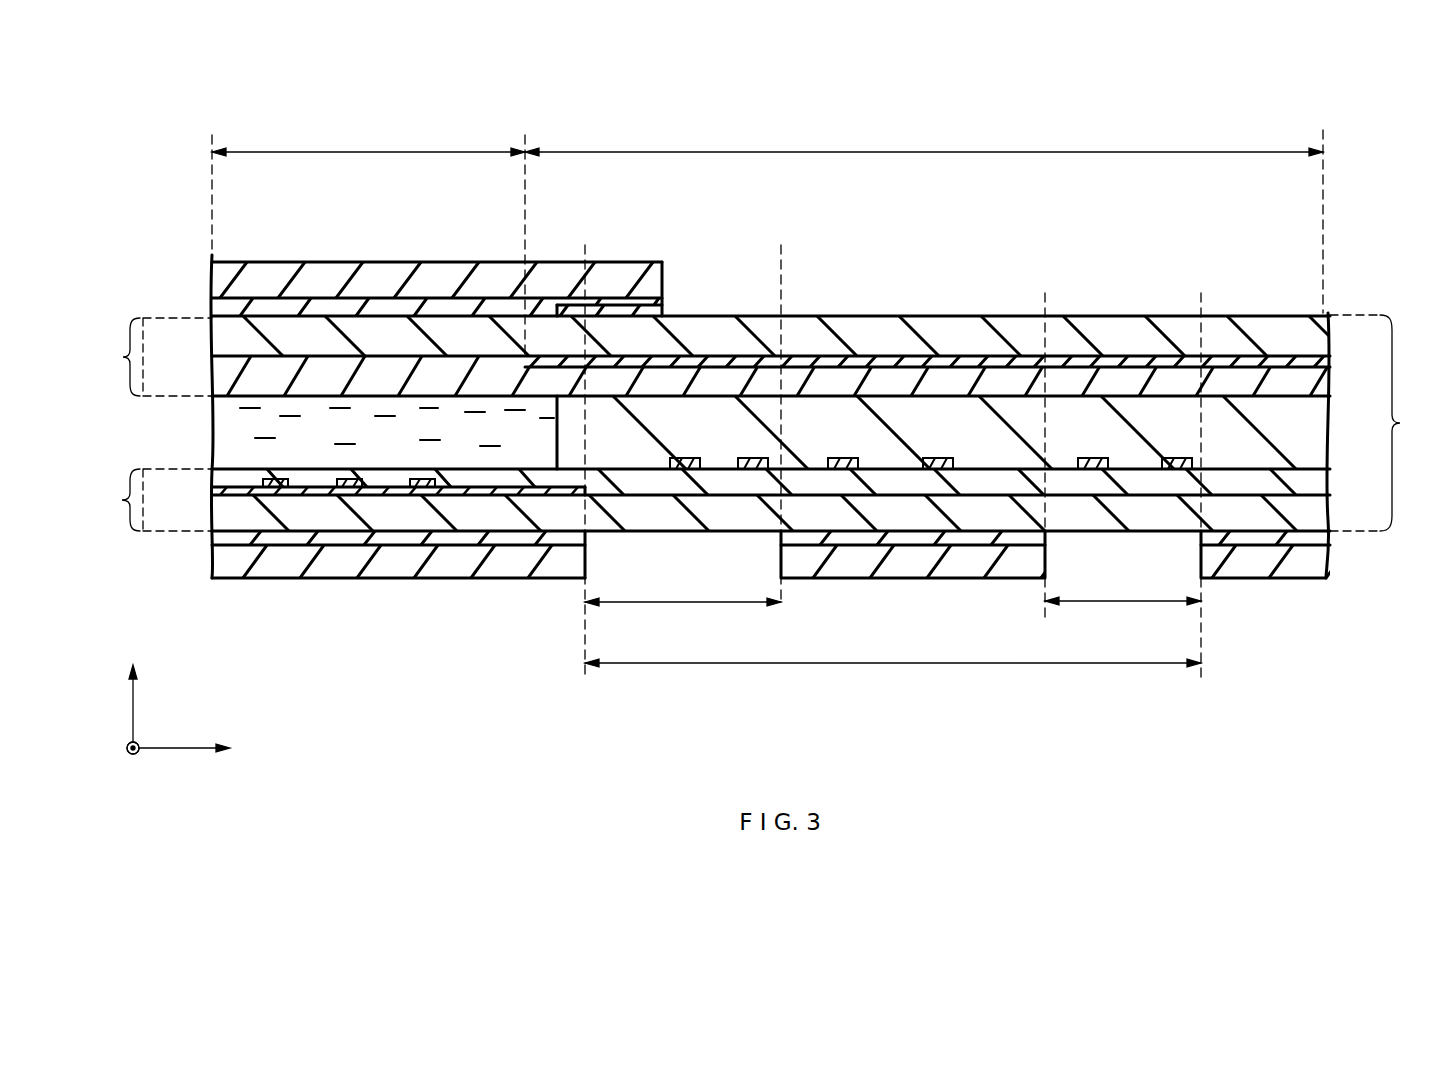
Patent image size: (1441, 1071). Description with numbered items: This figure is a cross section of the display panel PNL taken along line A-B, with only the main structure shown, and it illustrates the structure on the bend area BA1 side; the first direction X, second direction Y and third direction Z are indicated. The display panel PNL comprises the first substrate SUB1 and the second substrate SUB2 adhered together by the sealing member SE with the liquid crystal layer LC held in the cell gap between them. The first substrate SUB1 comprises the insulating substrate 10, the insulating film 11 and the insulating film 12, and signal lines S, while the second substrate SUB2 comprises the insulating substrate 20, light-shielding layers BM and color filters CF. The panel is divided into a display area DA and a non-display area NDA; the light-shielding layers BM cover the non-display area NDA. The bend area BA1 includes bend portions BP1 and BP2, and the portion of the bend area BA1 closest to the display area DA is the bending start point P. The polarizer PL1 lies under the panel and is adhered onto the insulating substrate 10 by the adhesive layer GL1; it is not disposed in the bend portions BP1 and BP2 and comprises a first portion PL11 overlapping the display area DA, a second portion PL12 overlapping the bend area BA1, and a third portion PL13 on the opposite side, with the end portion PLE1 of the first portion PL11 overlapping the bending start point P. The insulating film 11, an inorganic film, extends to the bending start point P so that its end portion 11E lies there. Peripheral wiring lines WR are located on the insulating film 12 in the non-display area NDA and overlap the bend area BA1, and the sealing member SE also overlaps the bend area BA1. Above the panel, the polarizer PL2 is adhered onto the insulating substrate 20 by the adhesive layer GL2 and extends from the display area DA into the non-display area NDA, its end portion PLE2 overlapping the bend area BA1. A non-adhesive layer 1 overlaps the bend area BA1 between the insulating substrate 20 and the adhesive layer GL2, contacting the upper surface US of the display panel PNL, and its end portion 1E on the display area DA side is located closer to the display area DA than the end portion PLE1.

The display area DA is at (368, 239).
The non-display area NDA is at (924, 218).
The polarizer (first optical film) PL2 is at (372, 270).
The adhesive layer GL2 is at (212, 305).
The non-adhesive layer 1 is at (652, 313).
The end portion of the non-adhesive layer 1E is at (553, 312).
The end portion of the polarizer PLE2 is at (662, 270).
The bending start point P is at (585, 448).
The insulating substrate 20 is at (225, 340).
The second substrate SUB2 is at (143, 357).
The color filters CF is at (225, 378).
The light-shielding layers BM is at (1320, 360).
The upper surface of the display panel US is at (995, 315).
The liquid crystal layer LC is at (230, 432).
The sealing member SE is at (1310, 428).
The peripheral wiring lines WR is at (752, 458).
The display panel PNL is at (1385, 423).
The first substrate SUB1 is at (140, 500).
The insulating film 12 is at (228, 480).
The insulating film 11 is at (222, 493).
The end portion of the insulating film 11E is at (588, 494).
The insulating substrate 10 is at (235, 512).
The adhesive layer GL1 is at (455, 542).
The polarizer (second optical film) PL1 is at (235, 565).
The first portion of the polarizer PL11 is at (400, 565).
The second portion of the polarizer PL12 is at (880, 568).
The third portion of the polarizer PL13 is at (1270, 570).
The end portion of the first portion PLE1 is at (588, 548).
The signal lines S is at (350, 488).
The point A of section line A-B A is at (212, 436).
The point B of section line A- B is at (1325, 465).
The bend portion BP1 is at (683, 440).
The bend portion BP2 is at (1123, 486).
The bend area BA1 is at (893, 678).
The first direction X is at (124, 765).
The second direction Y is at (197, 750).
The third direction Z is at (131, 695).